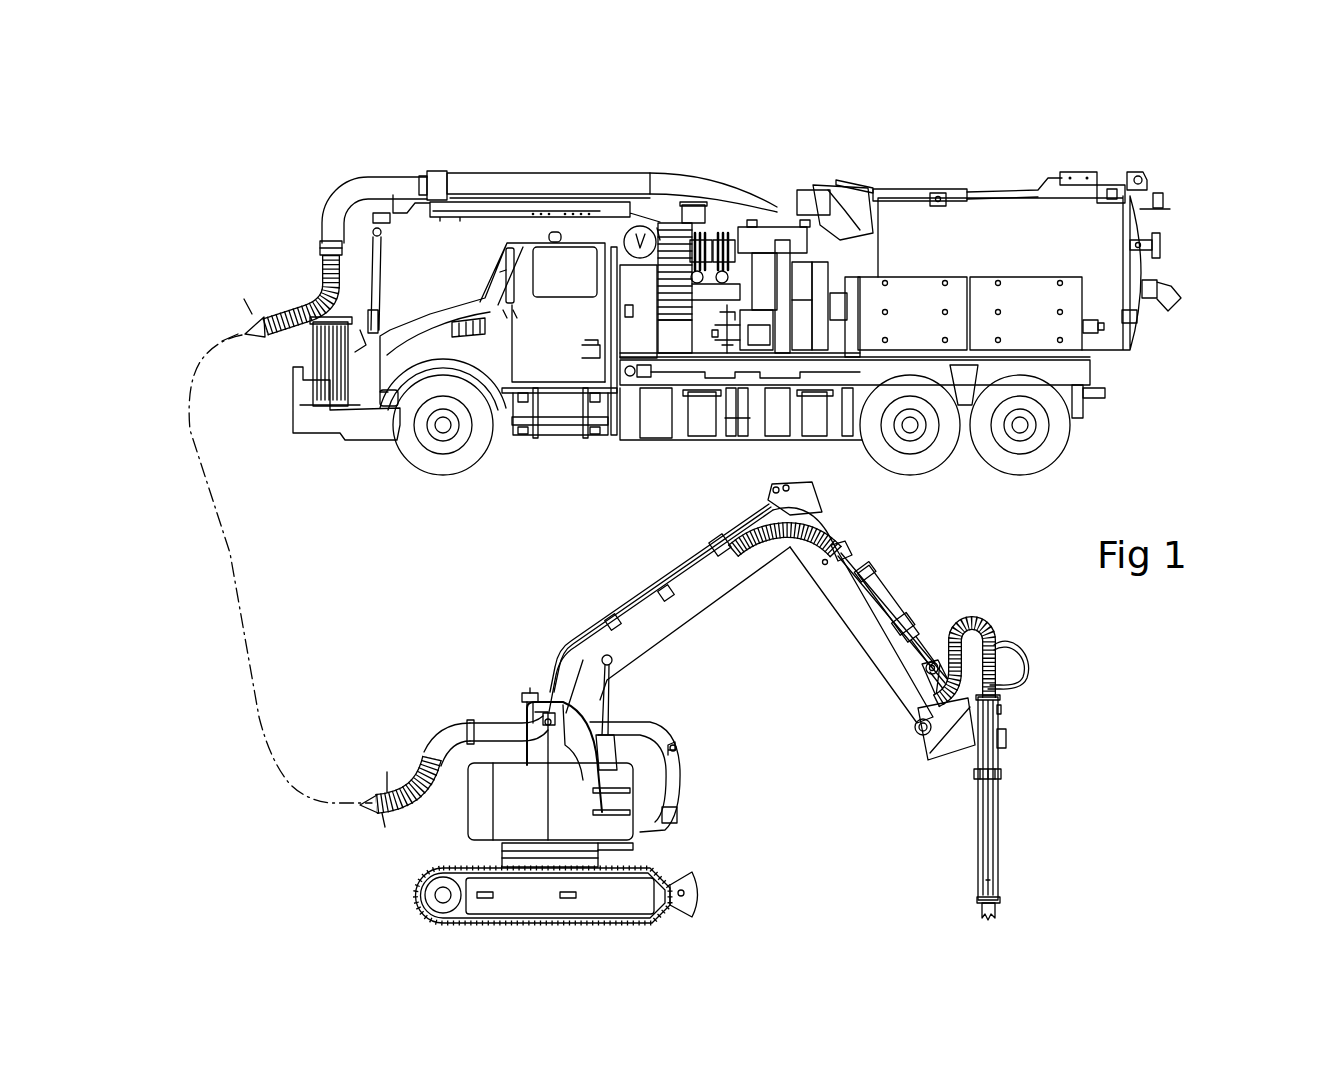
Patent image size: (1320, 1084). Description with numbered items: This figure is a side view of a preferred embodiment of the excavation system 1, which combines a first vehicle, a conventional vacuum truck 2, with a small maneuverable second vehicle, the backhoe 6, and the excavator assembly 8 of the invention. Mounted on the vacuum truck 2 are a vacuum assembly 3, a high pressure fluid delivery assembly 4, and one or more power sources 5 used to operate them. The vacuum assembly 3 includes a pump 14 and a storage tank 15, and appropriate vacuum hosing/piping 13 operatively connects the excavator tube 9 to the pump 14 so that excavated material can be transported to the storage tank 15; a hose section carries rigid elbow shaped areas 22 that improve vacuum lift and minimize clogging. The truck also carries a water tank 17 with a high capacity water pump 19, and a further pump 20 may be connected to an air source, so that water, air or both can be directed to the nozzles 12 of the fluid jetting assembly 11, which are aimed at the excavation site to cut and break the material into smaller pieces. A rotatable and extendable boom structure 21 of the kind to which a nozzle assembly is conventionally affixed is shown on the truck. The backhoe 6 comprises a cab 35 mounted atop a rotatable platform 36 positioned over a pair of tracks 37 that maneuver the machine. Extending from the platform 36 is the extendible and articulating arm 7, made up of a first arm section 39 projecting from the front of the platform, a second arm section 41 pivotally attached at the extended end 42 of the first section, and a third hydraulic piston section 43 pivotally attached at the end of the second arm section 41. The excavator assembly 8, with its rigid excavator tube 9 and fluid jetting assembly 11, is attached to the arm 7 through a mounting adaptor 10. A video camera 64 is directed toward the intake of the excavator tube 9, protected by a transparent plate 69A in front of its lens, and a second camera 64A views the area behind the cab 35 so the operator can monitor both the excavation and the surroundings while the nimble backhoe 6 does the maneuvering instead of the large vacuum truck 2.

The excavation system 1 is at (321, 159).
The vacuum truck 2 is at (958, 180).
The vacuum assembly 3 is at (1032, 325).
The high pressure fluid delivery assembly 4 is at (913, 309).
The power source 5 is at (684, 247).
The vehicle (small backhoe) 6 is at (521, 693).
The extendible and articulating arm 7 is at (832, 612).
The excavator assembly 8 is at (1015, 770).
The excavator tube 9 is at (998, 862).
The mounting adaptor 10 is at (957, 718).
The fluid jetting assembly 11 is at (977, 900).
The nozzles 12 is at (996, 914).
The vacuum hosing/piping 13 is at (309, 294).
The pump 14 is at (825, 276).
The storage tank 15 is at (1094, 233).
The water tank 17 is at (678, 440).
The water pump 19 is at (808, 276).
The pump 20 is at (797, 340).
The boom structure 21 is at (492, 173).
The rigid elbow shaped areas 22 is at (487, 728).
The cab 35 is at (689, 790).
The rotatable platform 36 is at (503, 857).
The tracks 37 is at (415, 893).
The first arm section 39 is at (665, 647).
The second arm section 41 is at (828, 487).
The extended end 42 is at (787, 545).
The hydraulic piston section 43 is at (938, 661).
The video camera 64 is at (1005, 737).
The second camera 64A is at (530, 688).
The transparent plate 69A is at (1001, 772).